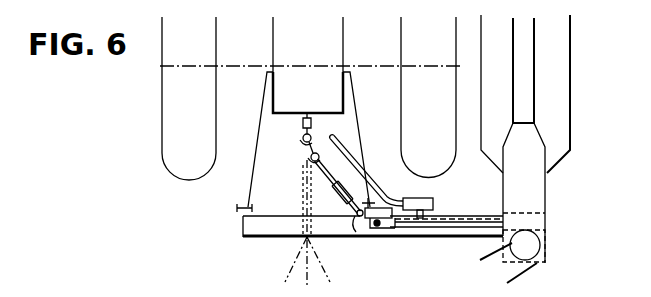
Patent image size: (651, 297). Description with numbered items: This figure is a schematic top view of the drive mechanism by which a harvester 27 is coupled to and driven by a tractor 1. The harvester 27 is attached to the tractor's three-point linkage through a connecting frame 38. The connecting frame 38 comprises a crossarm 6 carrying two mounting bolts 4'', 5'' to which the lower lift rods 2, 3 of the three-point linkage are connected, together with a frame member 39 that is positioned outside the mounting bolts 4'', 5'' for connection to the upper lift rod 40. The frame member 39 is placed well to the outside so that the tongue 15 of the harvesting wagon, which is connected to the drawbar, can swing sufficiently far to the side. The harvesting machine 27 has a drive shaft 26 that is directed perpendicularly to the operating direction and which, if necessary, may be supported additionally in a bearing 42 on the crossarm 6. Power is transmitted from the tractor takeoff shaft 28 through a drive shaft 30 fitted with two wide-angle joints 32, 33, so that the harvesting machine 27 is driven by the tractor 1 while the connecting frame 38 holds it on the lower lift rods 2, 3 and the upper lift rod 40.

The tractor 1 is at (273, 35).
The lower lift rod 2 is at (255, 155).
The lower lift rod 3 is at (365, 152).
The mounting bolt 4'' is at (225, 197).
The mounting bolt 5'' is at (339, 187).
The crossarm 6 is at (350, 232).
The tongue 15 is at (290, 267).
The drive shaft 26 is at (472, 216).
The harvester 27 is at (558, 162).
The tractor takeoff shaft 28 is at (302, 120).
The drive shaft 30 is at (333, 195).
The wide-angle joint 32 is at (303, 150).
The wide-angle joint 33 is at (366, 224).
The connecting frame 38 is at (232, 244).
The frame member 39 is at (433, 217).
The upper lift rod 40 is at (347, 146).
The bearing 42 is at (400, 233).